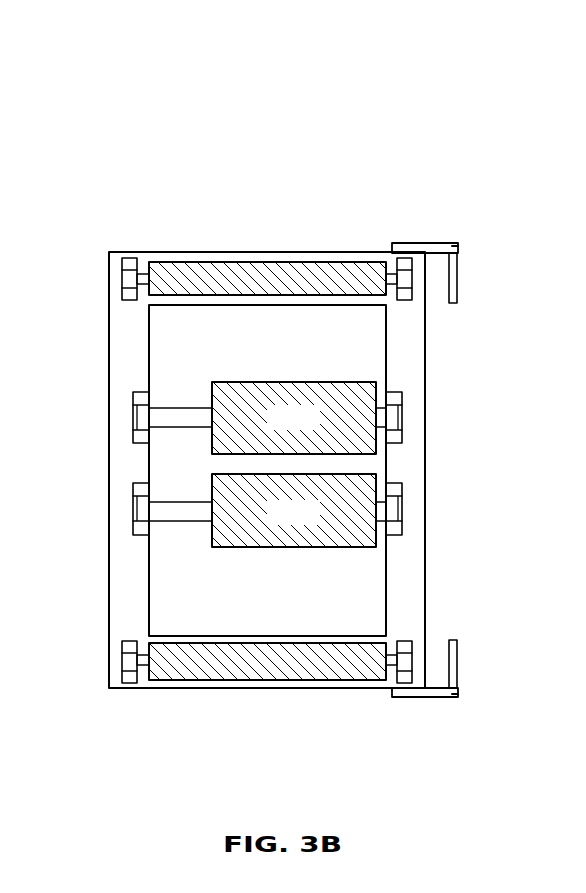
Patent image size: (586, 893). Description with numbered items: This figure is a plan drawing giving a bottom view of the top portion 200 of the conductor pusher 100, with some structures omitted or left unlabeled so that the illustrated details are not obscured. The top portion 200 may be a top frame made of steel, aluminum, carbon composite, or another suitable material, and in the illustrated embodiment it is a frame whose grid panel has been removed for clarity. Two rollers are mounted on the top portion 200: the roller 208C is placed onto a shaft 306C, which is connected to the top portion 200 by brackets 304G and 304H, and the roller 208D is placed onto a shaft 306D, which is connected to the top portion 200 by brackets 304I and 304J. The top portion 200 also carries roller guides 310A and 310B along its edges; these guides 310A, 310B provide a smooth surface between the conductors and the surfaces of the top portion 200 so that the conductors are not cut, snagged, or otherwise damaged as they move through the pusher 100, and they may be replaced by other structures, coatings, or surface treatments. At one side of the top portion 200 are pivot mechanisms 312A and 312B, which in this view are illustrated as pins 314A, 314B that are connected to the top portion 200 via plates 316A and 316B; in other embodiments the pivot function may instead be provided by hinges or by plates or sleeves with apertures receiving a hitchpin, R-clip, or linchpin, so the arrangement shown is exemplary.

The pusher 100 is at (428, 62).
The top portion 200 is at (190, 252).
The roller 208C is at (317, 428).
The roller 208D is at (317, 523).
The bracket 304G is at (138, 400).
The bracket 304H is at (398, 399).
The bracket 304I is at (138, 493).
The bracket 304J is at (398, 491).
The shaft 306C is at (183, 416).
The shaft 306D is at (180, 512).
The roller guide 310A is at (300, 262).
The roller guide 310B is at (302, 672).
The pivot mechanism 312A is at (432, 236).
The pivot mechanism 312B is at (432, 708).
The pin 314A is at (457, 286).
The pin 314B is at (457, 653).
The plate 316A is at (457, 246).
The plate 316B is at (457, 695).